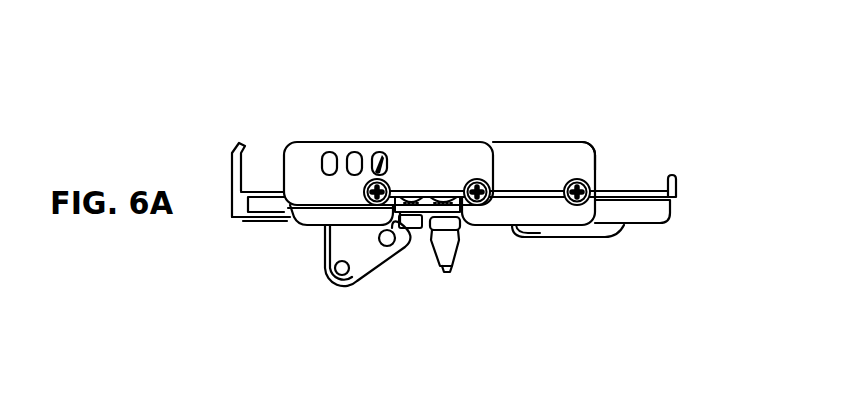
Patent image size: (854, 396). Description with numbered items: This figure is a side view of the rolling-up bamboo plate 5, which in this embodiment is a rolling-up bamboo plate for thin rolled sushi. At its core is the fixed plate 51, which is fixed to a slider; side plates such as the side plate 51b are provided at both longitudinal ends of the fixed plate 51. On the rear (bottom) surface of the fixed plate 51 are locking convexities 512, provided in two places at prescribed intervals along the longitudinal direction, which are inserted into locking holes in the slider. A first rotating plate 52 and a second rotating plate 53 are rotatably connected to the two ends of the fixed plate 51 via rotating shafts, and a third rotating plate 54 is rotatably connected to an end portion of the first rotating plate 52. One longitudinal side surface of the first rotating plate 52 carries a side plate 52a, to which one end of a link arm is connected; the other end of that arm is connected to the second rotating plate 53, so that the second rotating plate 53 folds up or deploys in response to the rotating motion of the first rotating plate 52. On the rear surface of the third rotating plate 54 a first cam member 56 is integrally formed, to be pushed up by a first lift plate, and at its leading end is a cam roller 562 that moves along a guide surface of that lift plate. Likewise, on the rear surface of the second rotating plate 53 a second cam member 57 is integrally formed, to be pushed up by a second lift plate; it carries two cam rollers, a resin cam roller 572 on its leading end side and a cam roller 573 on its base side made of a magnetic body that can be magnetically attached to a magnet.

The rolling-up bamboo plate 5 is at (455, 95).
The fixed plate 51 is at (423, 137).
The side plate 51b is at (355, 140).
The locking convexities 512 is at (446, 275).
The first rotating plate 52 is at (528, 136).
The side plate 52a is at (571, 141).
The second rotating plate 53 is at (268, 166).
The third rotating plate 54 is at (650, 182).
The first cam member 56 is at (590, 247).
The cam roller 562 is at (527, 242).
The second cam member 57 is at (360, 297).
The cam roller 572 is at (320, 268).
The cam roller 573 is at (400, 252).